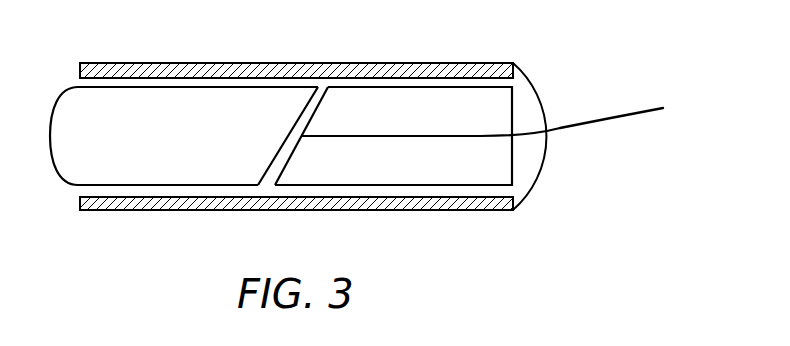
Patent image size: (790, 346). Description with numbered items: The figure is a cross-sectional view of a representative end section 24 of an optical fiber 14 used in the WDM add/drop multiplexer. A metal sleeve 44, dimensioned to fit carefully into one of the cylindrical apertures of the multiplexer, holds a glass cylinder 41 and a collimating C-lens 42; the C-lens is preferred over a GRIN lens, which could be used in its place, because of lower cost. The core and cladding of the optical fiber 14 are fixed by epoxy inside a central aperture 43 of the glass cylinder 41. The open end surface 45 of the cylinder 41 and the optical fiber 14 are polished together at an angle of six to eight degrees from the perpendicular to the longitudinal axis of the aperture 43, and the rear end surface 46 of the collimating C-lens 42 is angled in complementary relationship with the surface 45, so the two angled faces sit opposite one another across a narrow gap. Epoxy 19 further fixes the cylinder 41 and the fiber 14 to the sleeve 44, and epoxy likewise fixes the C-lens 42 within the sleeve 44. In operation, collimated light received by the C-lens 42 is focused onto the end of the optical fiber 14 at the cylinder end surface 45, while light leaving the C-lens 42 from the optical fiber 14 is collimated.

The optical fiber 14 is at (628, 112).
The epoxy 19 is at (522, 95).
The end section 24 is at (448, 252).
The glass cylinder 41 is at (412, 107).
The collimating C-lens 42 is at (137, 105).
The central aperture 43 is at (482, 138).
The metal sleeve 44 is at (220, 72).
The open end surface 45 is at (290, 148).
The rear end surface 46 is at (278, 157).